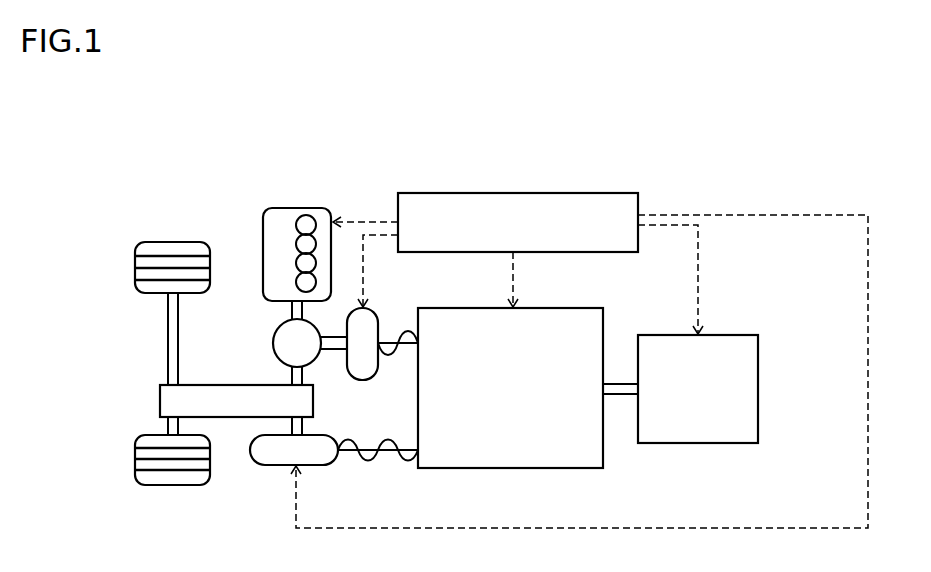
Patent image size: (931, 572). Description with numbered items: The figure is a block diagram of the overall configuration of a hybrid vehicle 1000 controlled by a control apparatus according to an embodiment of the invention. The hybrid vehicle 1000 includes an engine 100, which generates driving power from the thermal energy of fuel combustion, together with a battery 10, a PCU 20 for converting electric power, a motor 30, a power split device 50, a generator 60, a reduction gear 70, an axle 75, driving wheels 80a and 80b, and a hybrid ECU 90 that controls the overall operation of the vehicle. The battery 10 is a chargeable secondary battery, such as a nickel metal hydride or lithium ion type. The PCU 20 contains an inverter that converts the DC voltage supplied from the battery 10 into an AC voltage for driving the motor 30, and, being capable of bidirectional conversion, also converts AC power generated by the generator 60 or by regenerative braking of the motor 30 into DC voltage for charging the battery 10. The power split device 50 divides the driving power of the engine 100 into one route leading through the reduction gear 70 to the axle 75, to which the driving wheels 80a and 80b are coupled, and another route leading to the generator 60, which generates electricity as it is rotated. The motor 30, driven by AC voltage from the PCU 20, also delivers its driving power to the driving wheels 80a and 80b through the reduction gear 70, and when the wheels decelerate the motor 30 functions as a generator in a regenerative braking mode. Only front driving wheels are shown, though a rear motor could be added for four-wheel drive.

The hybrid vehicle 1000 is at (167, 125).
The battery 10 is at (698, 444).
The PCU (Power Control Unit) 20 is at (513, 468).
The motor 30 is at (275, 466).
The power split device 50 is at (277, 331).
The generator 60 is at (363, 382).
The reduction gear 70 is at (203, 385).
The axle 75 is at (168, 347).
The driving wheel 80a is at (177, 242).
The driving wheel 80b is at (178, 486).
The hybrid ECU 90 is at (514, 193).
The engine 100 is at (296, 208).